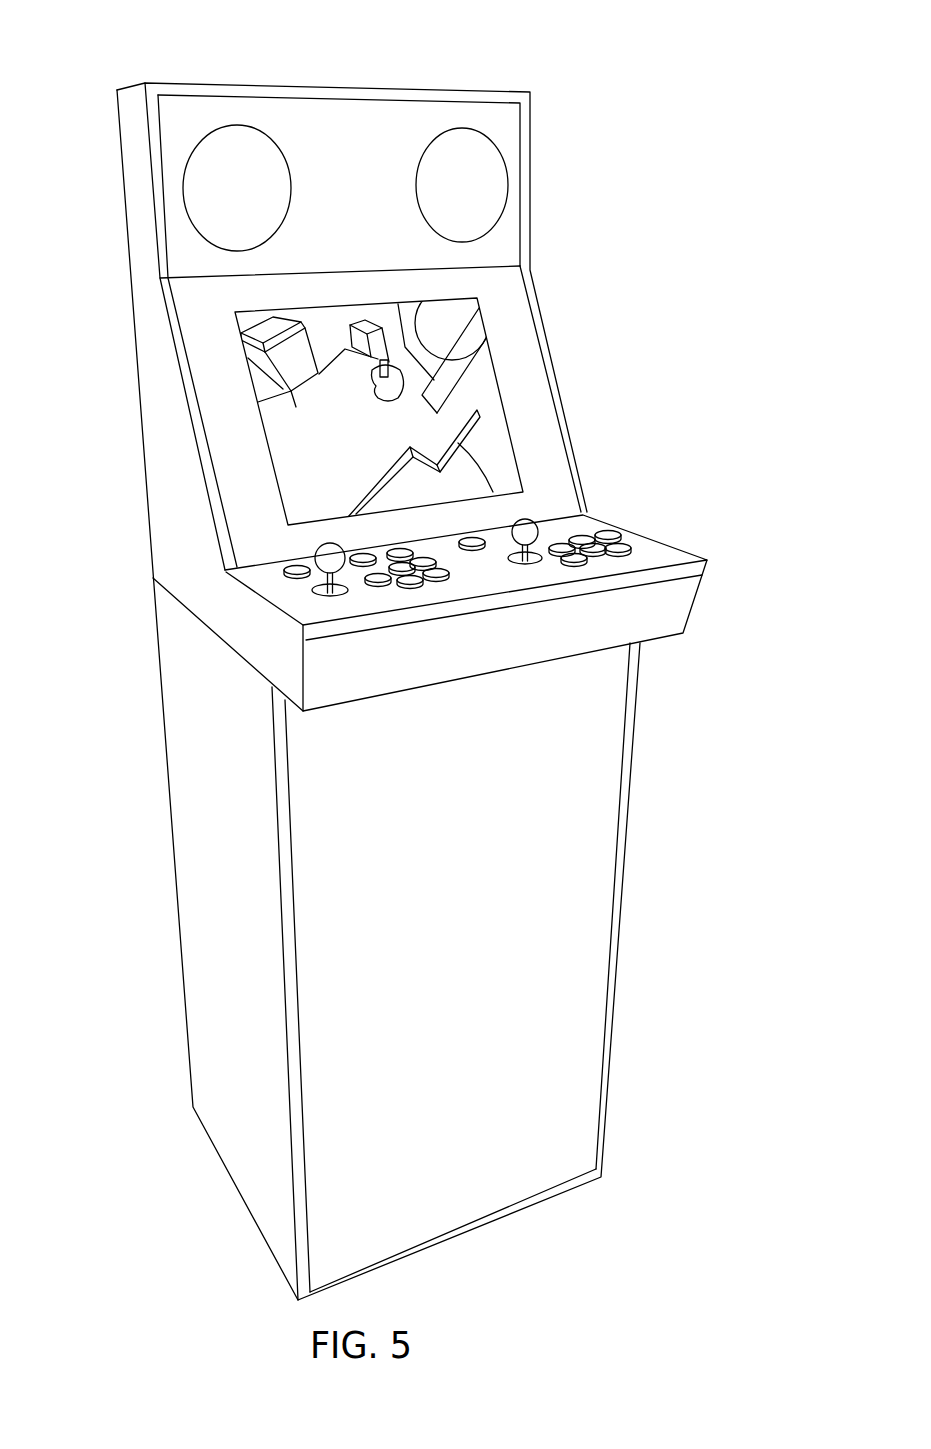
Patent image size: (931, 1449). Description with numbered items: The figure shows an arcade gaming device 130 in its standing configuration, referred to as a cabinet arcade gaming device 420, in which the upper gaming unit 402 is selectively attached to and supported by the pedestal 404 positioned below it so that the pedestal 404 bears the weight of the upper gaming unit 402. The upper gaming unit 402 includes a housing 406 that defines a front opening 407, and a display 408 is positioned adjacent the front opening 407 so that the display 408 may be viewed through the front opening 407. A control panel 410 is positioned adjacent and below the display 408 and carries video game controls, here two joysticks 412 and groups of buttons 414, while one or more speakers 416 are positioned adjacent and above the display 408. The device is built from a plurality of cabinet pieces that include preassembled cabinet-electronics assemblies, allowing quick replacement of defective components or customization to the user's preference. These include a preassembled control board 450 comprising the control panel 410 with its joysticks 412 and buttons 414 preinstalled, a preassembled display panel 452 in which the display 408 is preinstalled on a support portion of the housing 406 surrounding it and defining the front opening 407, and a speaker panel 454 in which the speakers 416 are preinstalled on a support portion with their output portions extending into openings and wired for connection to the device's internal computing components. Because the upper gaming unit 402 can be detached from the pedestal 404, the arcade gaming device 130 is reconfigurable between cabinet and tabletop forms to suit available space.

The arcade gaming device 130 is at (95, 78).
The upper gaming unit 402 is at (167, 438).
The pedestal 404 is at (197, 922).
The housing 406 is at (202, 328).
The front opening 407 is at (511, 431).
The display 408 is at (452, 407).
The control panel 410 is at (290, 587).
The joysticks 412 is at (530, 528).
The buttons 414 is at (630, 545).
The speakers 416 is at (182, 176).
The cabinet arcade gaming device 420 is at (640, 262).
The preassembled control board 450 is at (658, 563).
The preassembled display panel 452 is at (520, 342).
The speaker panel 454 is at (410, 115).